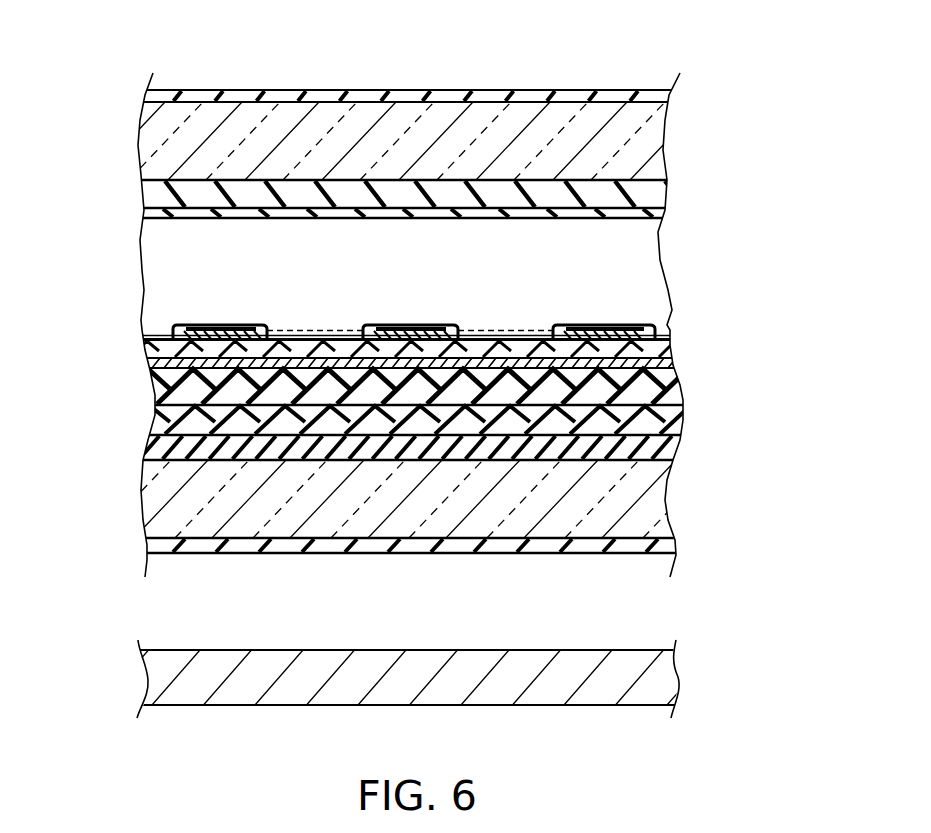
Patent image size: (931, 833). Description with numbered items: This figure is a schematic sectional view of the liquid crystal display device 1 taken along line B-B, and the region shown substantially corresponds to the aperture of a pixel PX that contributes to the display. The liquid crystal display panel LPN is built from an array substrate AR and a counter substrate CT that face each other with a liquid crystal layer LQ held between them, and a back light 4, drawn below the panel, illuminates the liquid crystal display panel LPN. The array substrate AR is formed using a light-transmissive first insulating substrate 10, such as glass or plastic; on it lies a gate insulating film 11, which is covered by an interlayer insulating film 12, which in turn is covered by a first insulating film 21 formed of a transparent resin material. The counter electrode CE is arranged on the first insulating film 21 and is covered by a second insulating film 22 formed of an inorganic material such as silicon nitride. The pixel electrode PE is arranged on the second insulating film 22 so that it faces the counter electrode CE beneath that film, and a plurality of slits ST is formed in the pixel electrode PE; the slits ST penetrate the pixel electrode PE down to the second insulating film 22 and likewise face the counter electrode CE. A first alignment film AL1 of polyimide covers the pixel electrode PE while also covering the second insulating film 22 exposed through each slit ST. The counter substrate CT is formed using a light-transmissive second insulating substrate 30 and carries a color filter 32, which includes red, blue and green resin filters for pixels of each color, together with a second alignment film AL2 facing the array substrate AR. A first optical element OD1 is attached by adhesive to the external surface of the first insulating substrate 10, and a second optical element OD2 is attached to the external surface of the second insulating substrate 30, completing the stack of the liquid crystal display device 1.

The liquid crystal display device 1 is at (708, 54).
The pixel PX is at (510, 63).
The line B- B is at (417, 62).
The second optical element OD2 is at (670, 96).
The second insulating substrate 30 is at (663, 145).
The color filter 32 is at (660, 192).
The second alignment film AL2 is at (660, 218).
The counter substrate CT is at (134, 143).
The liquid crystal layer LQ is at (146, 272).
The first alignment film AL1 is at (660, 331).
The pixel electrode PE is at (237, 334).
The slit ST is at (323, 327).
The counter electrode CE is at (515, 362).
The second insulating film 22 is at (668, 354).
The first insulating film 21 is at (672, 396).
The interlayer insulating film 12 is at (674, 422).
The gate insulating film 11 is at (668, 446).
The first insulating substrate 10 is at (664, 506).
The array substrate AR is at (136, 443).
The first optical element OD1 is at (674, 544).
The liquid crystal display panel LPN is at (141, 544).
The back light 4 is at (148, 690).